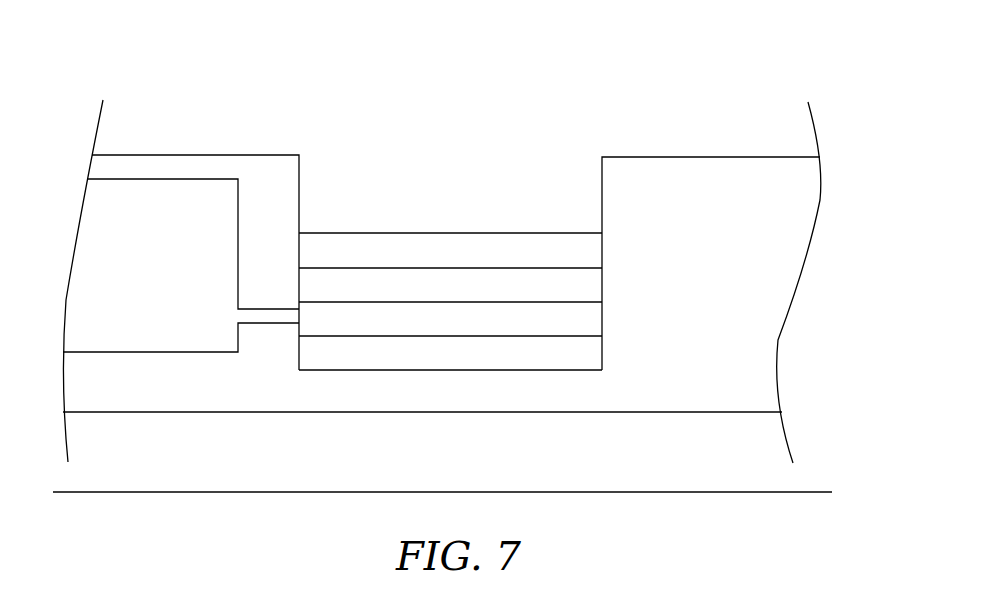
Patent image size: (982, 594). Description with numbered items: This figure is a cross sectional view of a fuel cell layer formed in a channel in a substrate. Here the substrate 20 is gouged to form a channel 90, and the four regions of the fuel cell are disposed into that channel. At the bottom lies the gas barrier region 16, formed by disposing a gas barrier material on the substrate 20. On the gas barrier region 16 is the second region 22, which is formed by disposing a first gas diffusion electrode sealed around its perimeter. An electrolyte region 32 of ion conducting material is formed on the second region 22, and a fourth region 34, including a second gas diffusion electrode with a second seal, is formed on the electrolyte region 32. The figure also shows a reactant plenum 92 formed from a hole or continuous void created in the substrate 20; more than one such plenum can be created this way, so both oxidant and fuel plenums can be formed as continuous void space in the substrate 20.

The channel 90 is at (602, 173).
The reactant plenum 92 is at (198, 323).
The fourth region 34 is at (603, 253).
The electrolyte region 32 is at (603, 288).
The second region 22 is at (603, 328).
The gas barrier region 16 is at (603, 360).
The substrate 20 is at (577, 405).